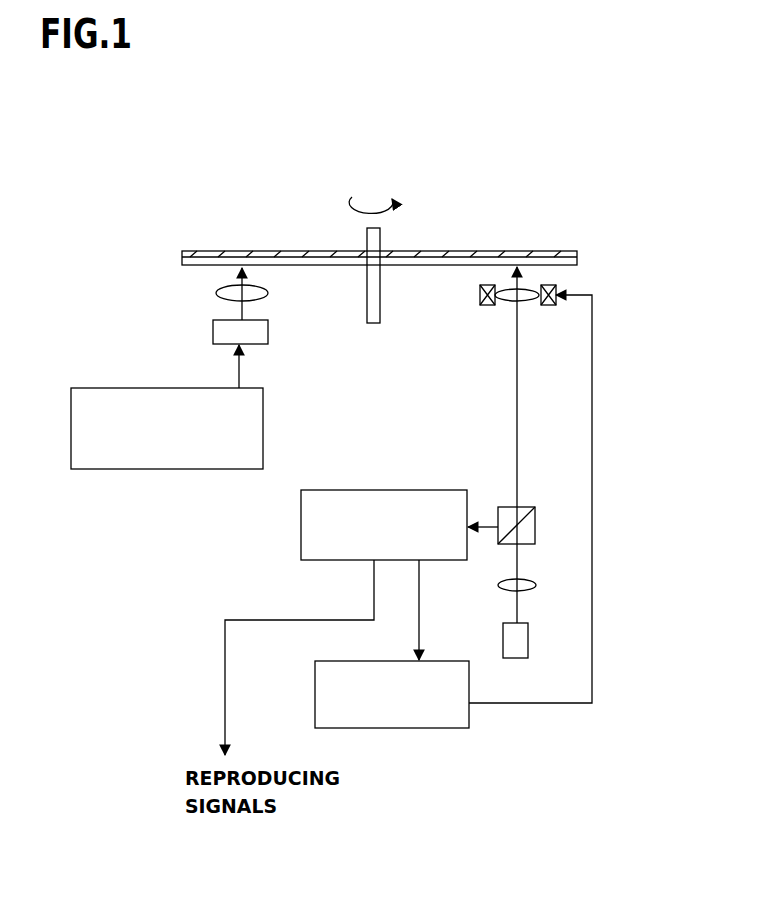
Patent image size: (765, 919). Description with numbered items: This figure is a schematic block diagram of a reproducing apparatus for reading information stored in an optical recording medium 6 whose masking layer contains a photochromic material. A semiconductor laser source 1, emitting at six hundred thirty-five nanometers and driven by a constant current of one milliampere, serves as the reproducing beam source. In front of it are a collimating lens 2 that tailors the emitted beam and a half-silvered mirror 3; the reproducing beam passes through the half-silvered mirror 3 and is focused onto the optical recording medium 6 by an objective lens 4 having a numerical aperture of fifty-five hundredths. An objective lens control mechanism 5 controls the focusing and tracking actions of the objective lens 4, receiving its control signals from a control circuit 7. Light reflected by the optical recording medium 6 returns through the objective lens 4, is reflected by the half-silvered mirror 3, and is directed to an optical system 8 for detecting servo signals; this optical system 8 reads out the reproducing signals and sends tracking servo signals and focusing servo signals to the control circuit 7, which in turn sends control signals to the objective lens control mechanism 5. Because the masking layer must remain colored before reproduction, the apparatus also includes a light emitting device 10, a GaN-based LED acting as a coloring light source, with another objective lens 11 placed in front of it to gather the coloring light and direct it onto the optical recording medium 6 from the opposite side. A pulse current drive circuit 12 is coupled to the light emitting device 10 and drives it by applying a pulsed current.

The semiconductor laser source 1 is at (528, 640).
The collimating lens 2 is at (538, 588).
The half-silvered mirror 3 is at (535, 518).
The objective lens 4 is at (527, 298).
The objective lens control mechanism 5 is at (557, 291).
The optical recording medium 6 is at (498, 250).
The control circuit 7 is at (427, 730).
The optical system for detecting servo signals 8 is at (422, 490).
The light emitting device 10 is at (268, 331).
The objective lens 11 is at (268, 291).
The pulse current drive circuit 12 is at (263, 420).